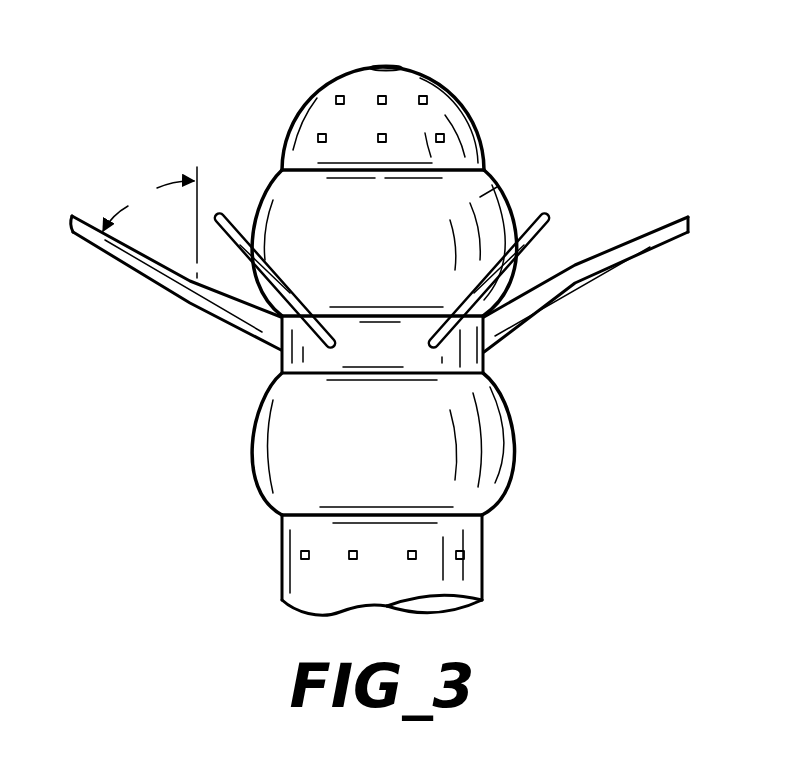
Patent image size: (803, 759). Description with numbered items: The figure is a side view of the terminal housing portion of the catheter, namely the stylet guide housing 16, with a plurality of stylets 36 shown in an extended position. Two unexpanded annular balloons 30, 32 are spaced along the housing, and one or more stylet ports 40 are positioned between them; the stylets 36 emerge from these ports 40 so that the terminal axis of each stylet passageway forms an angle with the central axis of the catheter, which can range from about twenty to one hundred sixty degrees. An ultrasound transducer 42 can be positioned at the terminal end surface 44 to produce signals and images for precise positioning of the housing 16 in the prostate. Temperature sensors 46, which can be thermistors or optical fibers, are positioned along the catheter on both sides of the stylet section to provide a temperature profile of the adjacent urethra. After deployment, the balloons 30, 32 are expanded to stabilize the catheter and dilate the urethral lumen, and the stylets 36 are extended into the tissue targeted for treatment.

The stylet guide housing 16 is at (379, 310).
The annular balloon 30 is at (483, 203).
The annular balloon 32 is at (467, 424).
The stylets 36 is at (530, 247).
The stylet ports 40 is at (332, 355).
The ultrasound transducer 42 is at (375, 66).
The terminal end surface 44 is at (421, 66).
The temperature sensors 46 is at (336, 100).